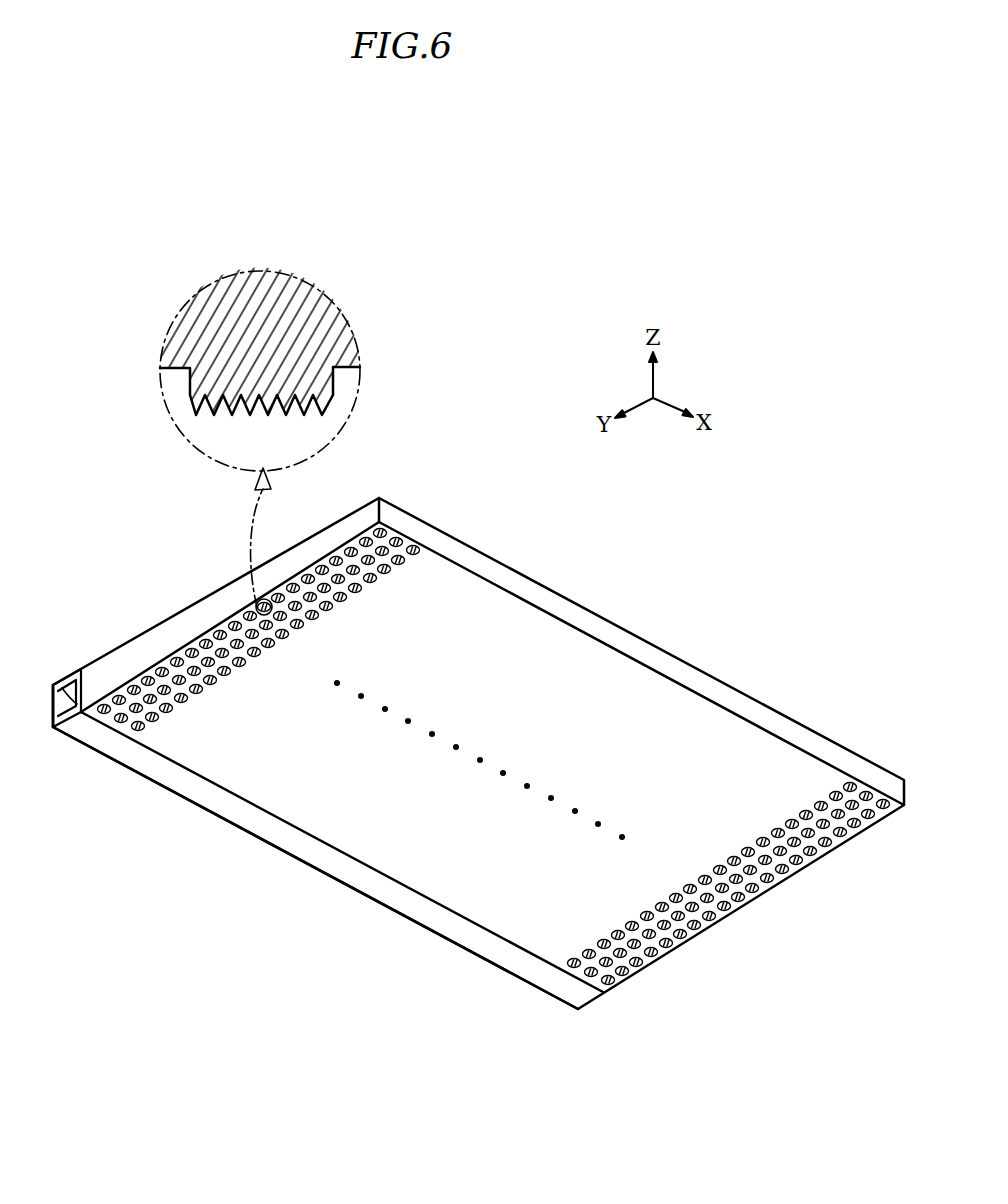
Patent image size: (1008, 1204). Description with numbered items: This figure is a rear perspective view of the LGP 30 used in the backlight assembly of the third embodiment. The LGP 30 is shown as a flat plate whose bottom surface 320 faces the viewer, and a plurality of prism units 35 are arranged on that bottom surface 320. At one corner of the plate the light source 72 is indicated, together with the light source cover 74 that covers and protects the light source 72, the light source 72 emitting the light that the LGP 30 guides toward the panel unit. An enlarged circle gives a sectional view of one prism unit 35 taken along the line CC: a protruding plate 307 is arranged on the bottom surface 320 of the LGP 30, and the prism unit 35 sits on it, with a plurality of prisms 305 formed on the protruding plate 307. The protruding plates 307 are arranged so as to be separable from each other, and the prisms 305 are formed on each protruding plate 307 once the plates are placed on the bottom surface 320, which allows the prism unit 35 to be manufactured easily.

The LGP 30 is at (792, 863).
The prism unit 35 is at (343, 419).
The light source 72 is at (72, 699).
The light source cover 74 is at (88, 746).
The prisms 305 is at (303, 405).
The protruding plate 307 is at (407, 538).
The bottom surface 320 is at (397, 843).
The line CC C is at (255, 613).